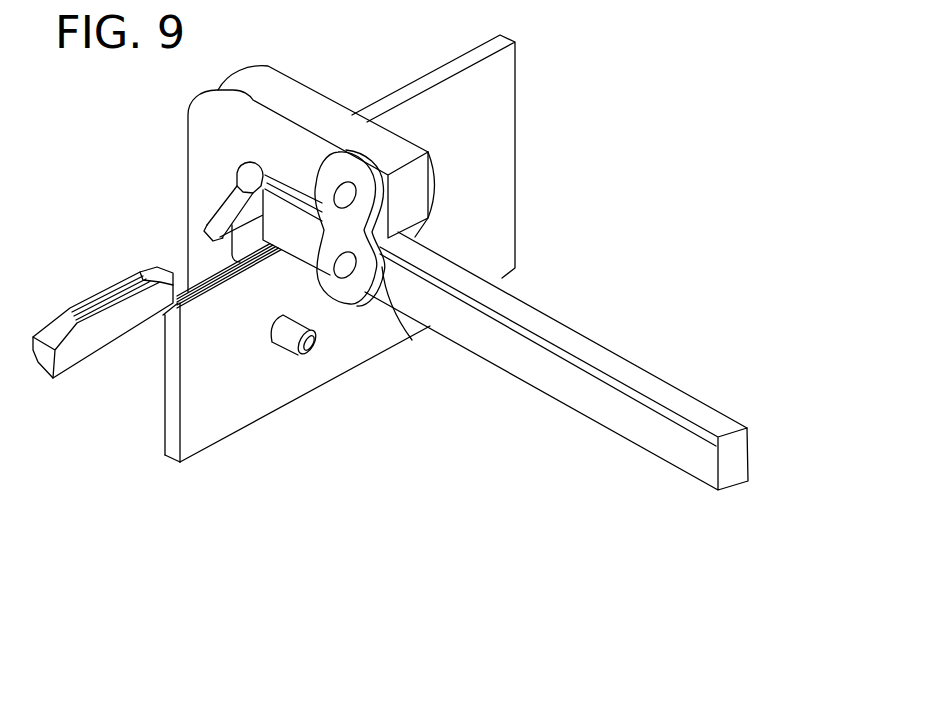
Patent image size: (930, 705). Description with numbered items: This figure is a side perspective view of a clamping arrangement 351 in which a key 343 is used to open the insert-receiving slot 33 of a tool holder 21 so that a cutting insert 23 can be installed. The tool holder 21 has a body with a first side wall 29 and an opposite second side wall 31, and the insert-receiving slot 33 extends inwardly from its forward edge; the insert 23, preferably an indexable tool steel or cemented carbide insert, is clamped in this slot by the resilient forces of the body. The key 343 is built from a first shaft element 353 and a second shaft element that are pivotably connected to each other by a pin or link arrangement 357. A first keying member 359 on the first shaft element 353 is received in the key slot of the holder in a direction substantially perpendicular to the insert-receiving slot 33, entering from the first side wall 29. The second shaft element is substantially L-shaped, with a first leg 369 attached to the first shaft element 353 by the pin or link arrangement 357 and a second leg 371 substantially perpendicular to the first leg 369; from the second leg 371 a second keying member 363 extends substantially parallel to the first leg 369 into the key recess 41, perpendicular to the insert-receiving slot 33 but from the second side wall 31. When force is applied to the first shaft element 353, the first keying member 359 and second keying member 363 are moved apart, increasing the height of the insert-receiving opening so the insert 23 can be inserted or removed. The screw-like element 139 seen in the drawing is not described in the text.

The holder blade 21 is at (527, 178).
The cutting insert 23 is at (62, 320).
The first side wall 29 is at (268, 402).
The second side wall 31 is at (163, 372).
The insert-receiving slot 33 is at (227, 255).
The key recess 41 is at (167, 436).
The clamping screw 139 is at (243, 210).
The key 343 is at (603, 327).
The clamping arrangement 351 is at (362, 73).
The first shaft element 353 is at (195, 100).
The pin or link arrangement 357 is at (413, 340).
The first keying member 359 is at (293, 223).
The second keying member 363 is at (312, 350).
The first leg 369 is at (302, 100).
The second leg 371 is at (197, 232).